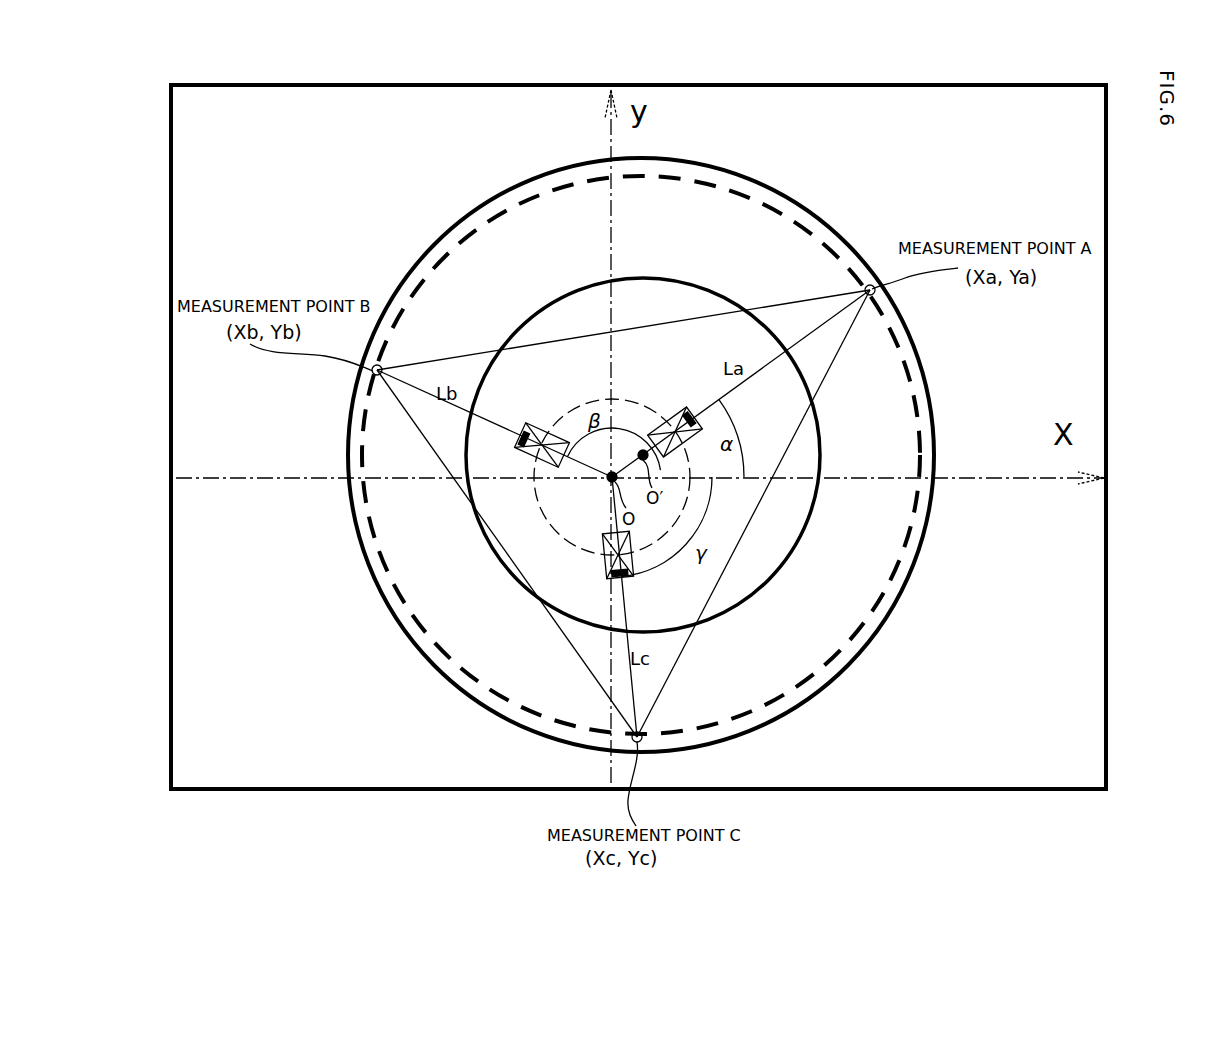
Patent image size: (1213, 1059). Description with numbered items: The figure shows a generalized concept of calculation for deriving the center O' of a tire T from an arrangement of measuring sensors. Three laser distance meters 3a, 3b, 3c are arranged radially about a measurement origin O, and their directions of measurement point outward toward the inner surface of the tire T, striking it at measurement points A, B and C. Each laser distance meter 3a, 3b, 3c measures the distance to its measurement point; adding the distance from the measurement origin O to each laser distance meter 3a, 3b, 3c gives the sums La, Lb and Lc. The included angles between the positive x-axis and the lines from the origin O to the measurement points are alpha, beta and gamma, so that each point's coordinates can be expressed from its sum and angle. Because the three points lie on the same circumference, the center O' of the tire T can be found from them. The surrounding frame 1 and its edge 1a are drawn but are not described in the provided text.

The table 1 is at (1012, 797).
The table edge 1a is at (1020, 105).
The tire T is at (780, 270).
The laser distance meter 3a is at (676, 418).
The laser distance meter 3b is at (540, 431).
The laser distance meter 3c is at (628, 572).